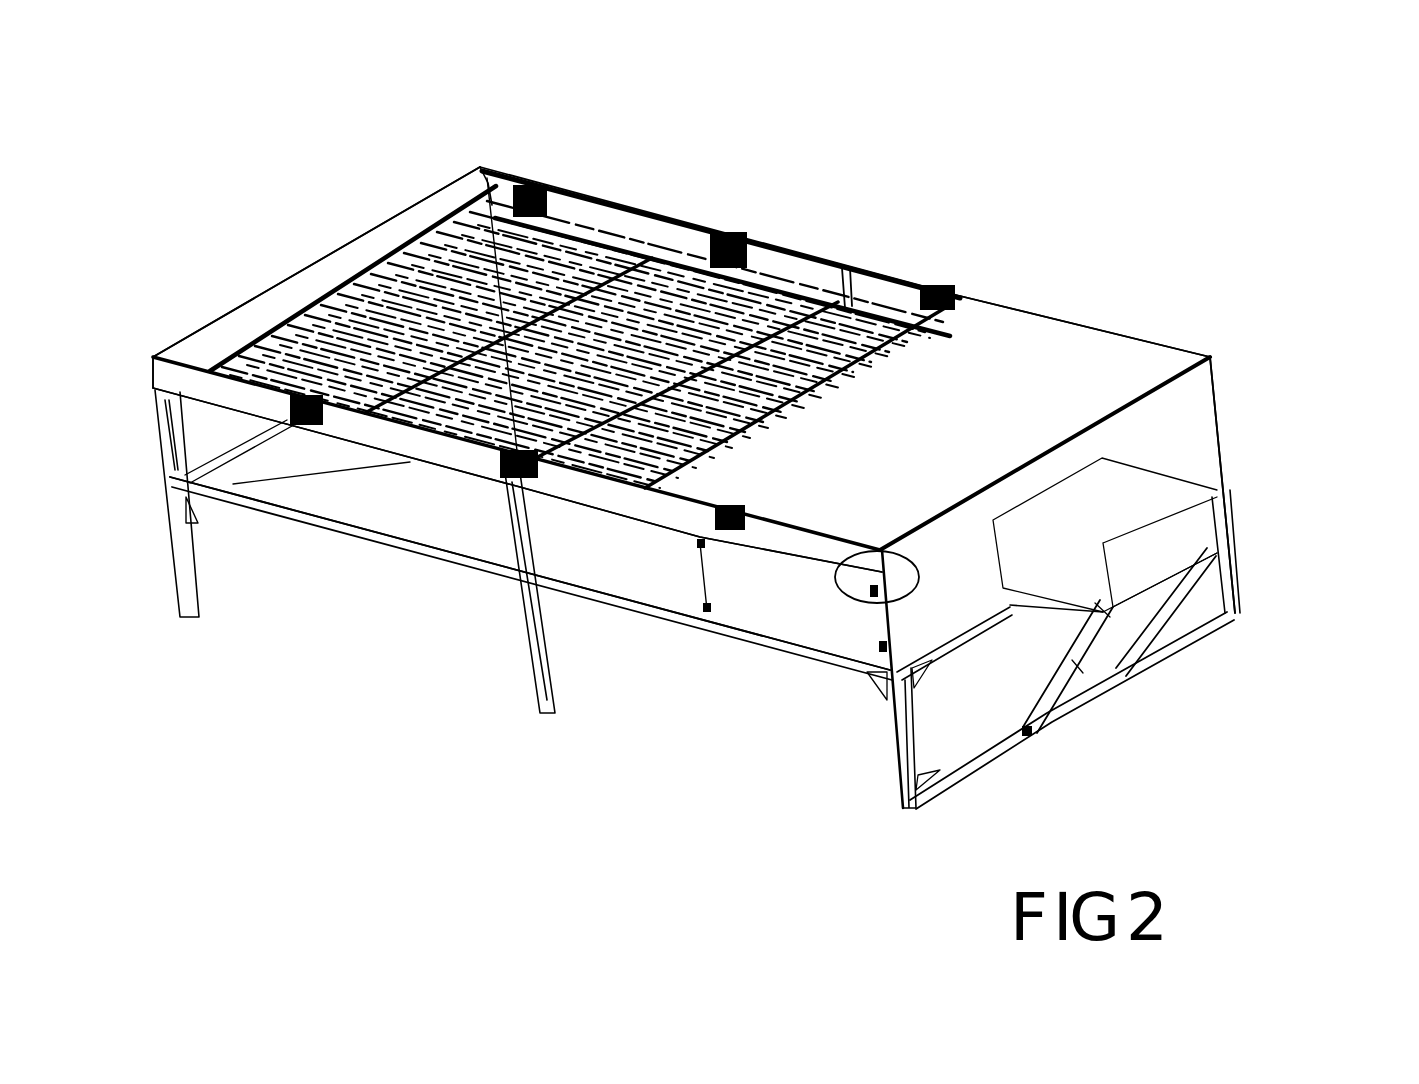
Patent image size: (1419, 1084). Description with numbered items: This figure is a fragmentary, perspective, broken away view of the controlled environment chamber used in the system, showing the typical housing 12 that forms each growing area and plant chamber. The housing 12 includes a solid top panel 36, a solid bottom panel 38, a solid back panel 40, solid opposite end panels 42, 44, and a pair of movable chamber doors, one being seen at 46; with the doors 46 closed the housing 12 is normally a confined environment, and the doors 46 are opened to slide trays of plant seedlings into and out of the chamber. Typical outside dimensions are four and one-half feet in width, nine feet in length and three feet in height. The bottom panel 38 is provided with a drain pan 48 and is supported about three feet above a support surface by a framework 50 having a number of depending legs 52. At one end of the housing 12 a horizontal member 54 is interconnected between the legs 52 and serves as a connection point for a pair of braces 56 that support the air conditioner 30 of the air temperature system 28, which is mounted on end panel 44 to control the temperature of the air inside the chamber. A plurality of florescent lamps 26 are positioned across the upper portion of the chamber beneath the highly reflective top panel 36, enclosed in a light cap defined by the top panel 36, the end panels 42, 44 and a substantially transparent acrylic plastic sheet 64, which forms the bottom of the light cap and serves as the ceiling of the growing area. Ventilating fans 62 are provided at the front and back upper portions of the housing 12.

The housing 12 is at (1257, 418).
The florescent lamps 26 is at (353, 260).
The air temperature system 28 is at (1248, 504).
The air conditioner 30 is at (1165, 592).
The top panel 36 is at (982, 347).
The bottom panel 38 is at (445, 562).
The back panel 40 is at (783, 243).
The end panel 42 is at (250, 313).
The end panel 44 is at (1148, 437).
The chamber door 46 is at (672, 565).
The drain pan 48 is at (348, 483).
The framework 50 is at (470, 530).
The legs 52 is at (893, 747).
The horizontal member 54 is at (1027, 737).
The braces 56 is at (1077, 668).
The ventilating fans 62 is at (527, 182).
The acrylic plastic sheet 64 is at (857, 290).